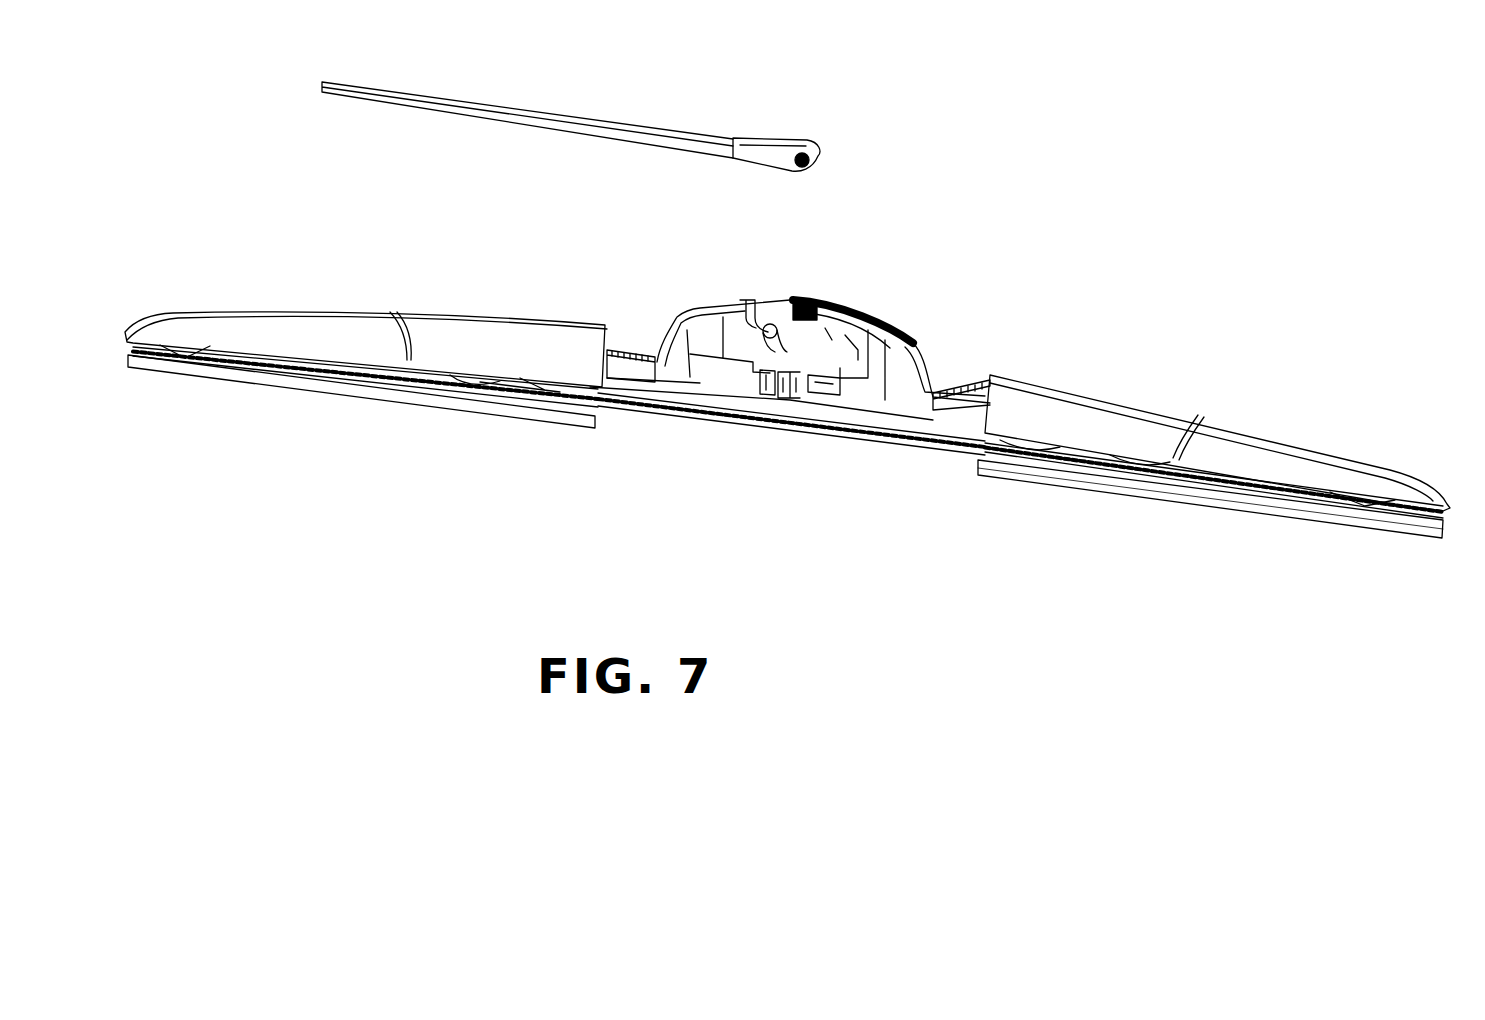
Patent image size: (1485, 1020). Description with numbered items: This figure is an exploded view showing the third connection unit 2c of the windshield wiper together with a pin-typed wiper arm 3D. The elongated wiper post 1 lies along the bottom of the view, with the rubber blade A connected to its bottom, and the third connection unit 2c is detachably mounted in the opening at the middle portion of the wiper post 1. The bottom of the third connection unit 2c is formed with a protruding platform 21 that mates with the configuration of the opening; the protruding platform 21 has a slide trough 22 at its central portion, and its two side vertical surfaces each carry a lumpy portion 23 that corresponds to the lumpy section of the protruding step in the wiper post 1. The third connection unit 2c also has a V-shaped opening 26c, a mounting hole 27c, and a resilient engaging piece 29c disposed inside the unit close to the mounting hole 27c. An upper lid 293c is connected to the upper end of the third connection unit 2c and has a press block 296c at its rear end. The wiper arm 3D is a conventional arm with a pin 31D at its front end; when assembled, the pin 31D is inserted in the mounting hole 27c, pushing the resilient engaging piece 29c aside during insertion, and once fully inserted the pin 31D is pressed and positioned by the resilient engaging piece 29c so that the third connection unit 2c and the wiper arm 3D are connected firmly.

The wiper post 1 is at (1272, 457).
The rubber blade A is at (1285, 512).
The third connection unit 2c is at (707, 308).
The protruding platform 21 is at (732, 428).
The slide trough 22 is at (787, 400).
The lumpy portion 23 is at (842, 397).
The V-shaped opening 26c is at (767, 395).
The mounting hole 27c is at (773, 310).
The resilient engaging piece 29c is at (738, 305).
The upper lid 293c is at (867, 313).
The press block 296c is at (807, 300).
The pin-typed wiper arm 3D is at (675, 142).
The pin 31D is at (818, 160).